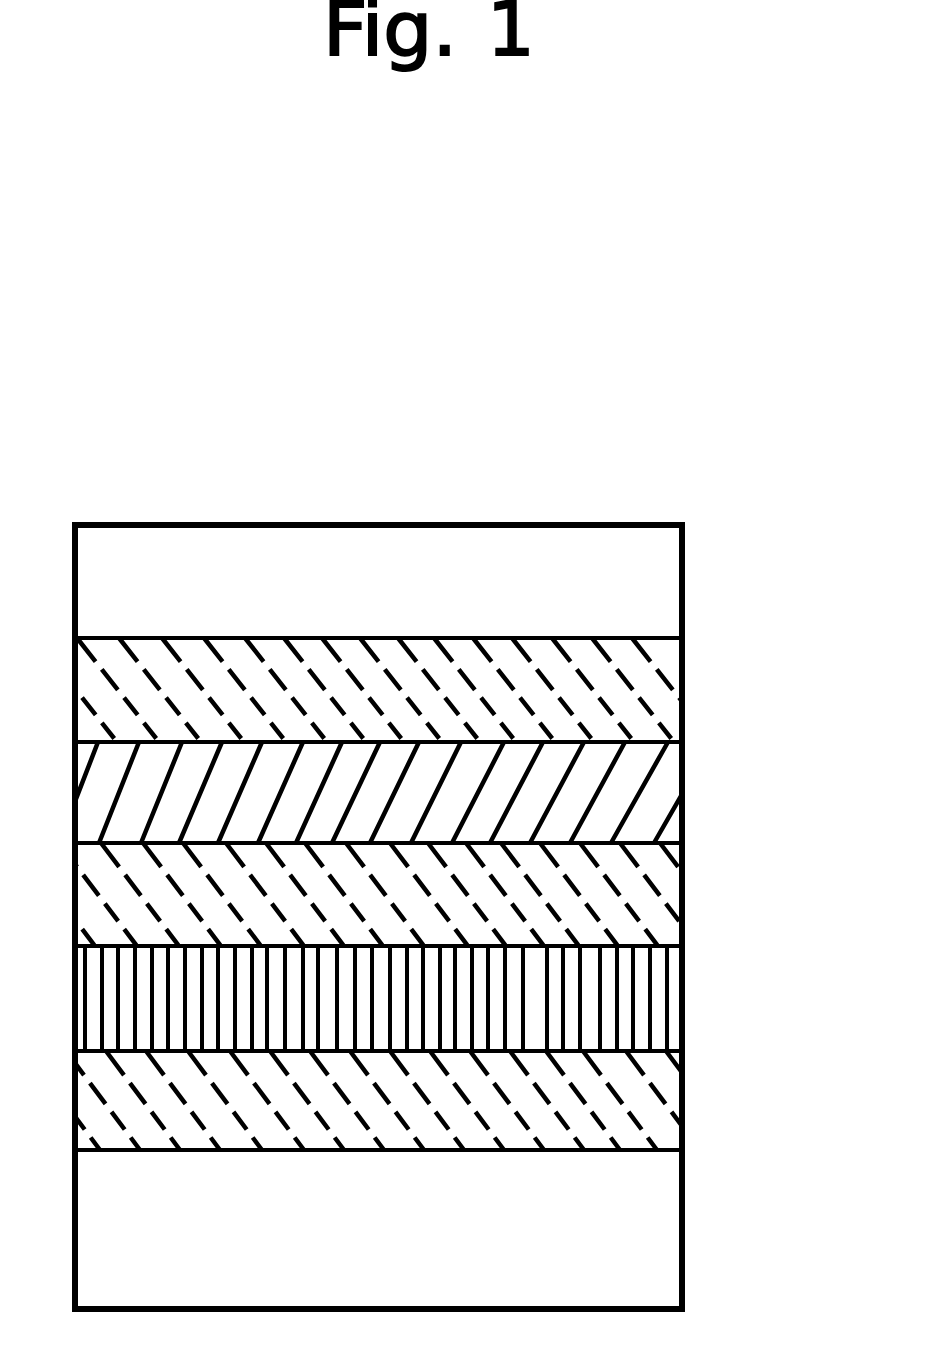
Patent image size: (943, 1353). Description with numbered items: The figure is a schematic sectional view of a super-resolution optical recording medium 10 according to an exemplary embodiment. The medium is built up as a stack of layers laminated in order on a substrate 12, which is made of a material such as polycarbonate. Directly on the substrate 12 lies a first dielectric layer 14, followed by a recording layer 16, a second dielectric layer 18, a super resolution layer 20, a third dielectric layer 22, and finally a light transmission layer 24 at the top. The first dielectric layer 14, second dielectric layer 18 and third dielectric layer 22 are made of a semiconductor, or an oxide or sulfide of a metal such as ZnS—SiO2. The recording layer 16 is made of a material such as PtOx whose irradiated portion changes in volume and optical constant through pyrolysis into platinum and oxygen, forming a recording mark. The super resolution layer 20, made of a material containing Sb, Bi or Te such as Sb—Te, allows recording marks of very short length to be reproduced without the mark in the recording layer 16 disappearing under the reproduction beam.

The super-resolution optical recording medium 10 is at (503, 527).
The substrate 12 is at (653, 1223).
The first dielectric layer 14 is at (670, 1087).
The recording layer 16 is at (670, 980).
The second dielectric layer 18 is at (670, 877).
The super resolution layer 20 is at (670, 783).
The third dielectric layer 22 is at (667, 670).
The light transmission layer 24 is at (667, 588).